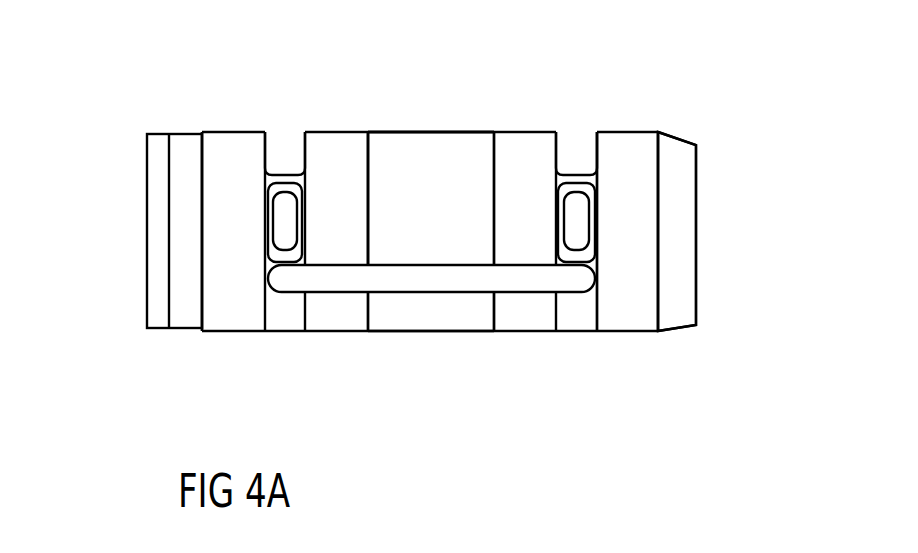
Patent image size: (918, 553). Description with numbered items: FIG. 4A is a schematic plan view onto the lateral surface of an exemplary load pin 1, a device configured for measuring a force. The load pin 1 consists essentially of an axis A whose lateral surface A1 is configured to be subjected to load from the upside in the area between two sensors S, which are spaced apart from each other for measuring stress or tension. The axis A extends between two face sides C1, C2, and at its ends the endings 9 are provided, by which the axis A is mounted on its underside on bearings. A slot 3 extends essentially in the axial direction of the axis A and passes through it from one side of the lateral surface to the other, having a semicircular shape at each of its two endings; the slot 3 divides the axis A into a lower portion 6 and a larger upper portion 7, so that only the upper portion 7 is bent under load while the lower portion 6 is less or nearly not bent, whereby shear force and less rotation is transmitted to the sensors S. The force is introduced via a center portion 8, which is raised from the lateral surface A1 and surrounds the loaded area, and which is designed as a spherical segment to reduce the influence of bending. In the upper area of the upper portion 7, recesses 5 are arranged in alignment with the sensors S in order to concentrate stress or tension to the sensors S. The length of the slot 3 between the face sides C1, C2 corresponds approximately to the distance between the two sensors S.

The load pin 1 is at (155, 95).
The slot 3 is at (468, 283).
The recesses 5 is at (290, 145).
The lower portion 6 is at (427, 165).
The upper portion 7 is at (423, 313).
The center portion 8 is at (395, 152).
The endings 9 is at (224, 333).
The axis A is at (683, 206).
The lateral surface A1 is at (480, 150).
The face side C1 is at (146, 235).
The face side C2 is at (698, 238).
The sensors S is at (282, 207).